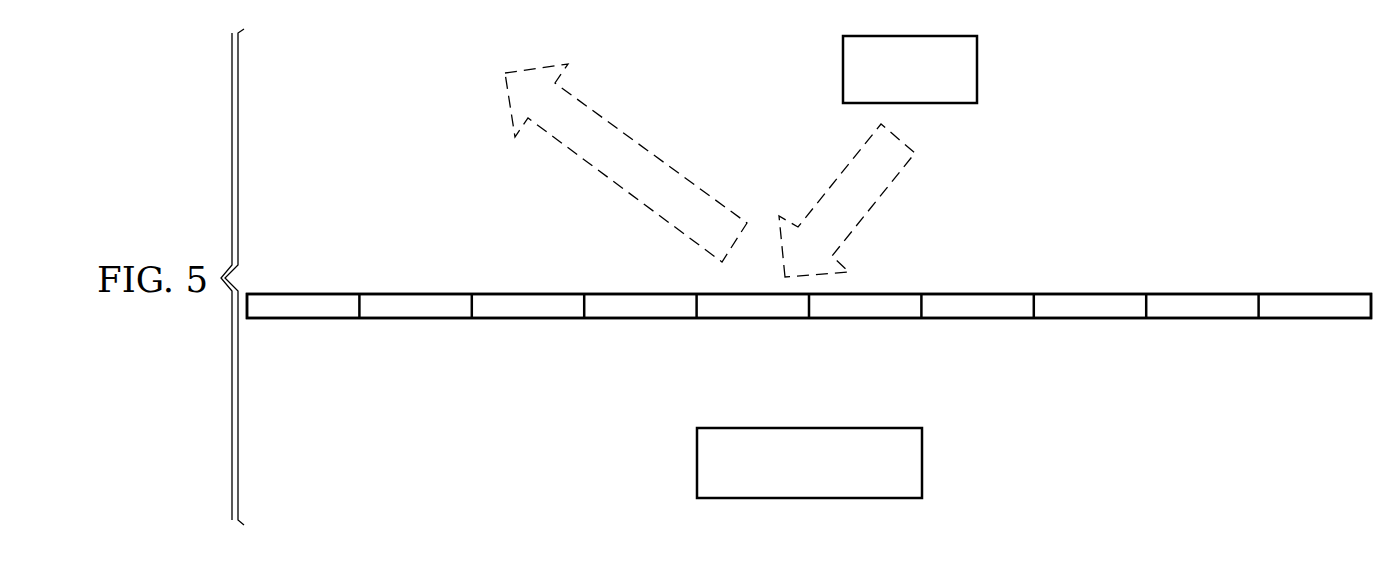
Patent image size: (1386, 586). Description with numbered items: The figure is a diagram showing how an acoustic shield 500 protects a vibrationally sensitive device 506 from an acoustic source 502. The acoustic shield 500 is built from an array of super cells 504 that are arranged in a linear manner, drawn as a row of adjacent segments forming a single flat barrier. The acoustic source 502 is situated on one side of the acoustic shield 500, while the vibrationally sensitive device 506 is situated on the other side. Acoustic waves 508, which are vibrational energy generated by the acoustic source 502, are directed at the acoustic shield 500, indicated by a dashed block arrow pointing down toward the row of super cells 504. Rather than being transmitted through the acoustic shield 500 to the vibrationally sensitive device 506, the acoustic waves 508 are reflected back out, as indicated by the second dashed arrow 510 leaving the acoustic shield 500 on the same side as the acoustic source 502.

The acoustic shield 500 is at (499, 247).
The acoustic source 502 is at (978, 72).
The super cells 504 is at (302, 308).
The vibrationally sensitive device 506 is at (923, 465).
The acoustic waves 508 is at (850, 163).
The arrow 510 is at (678, 135).